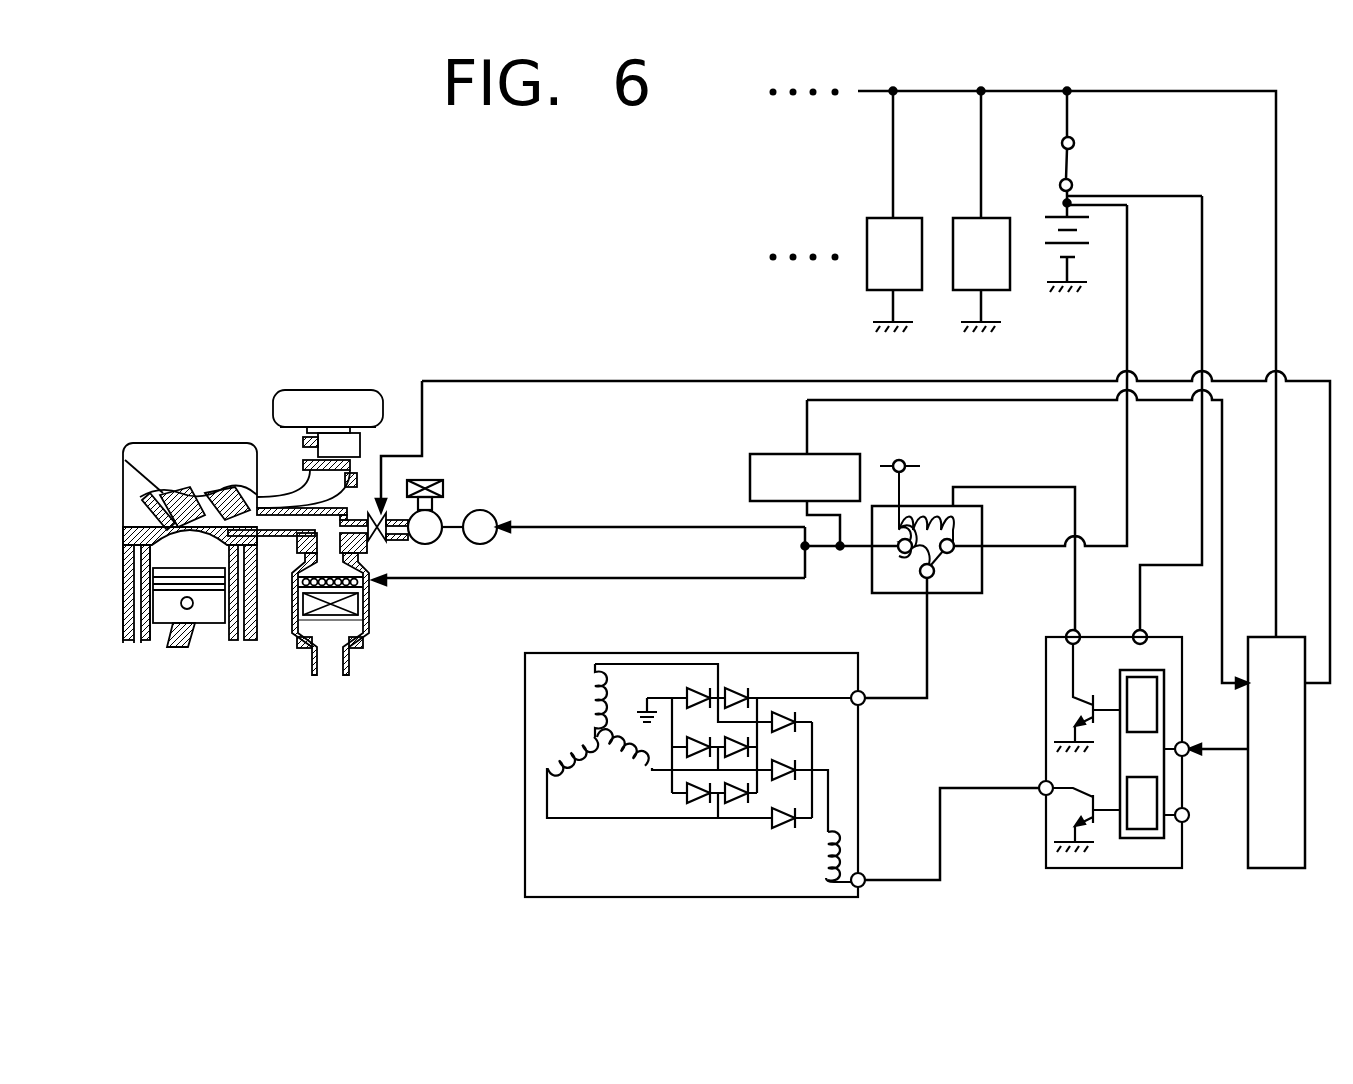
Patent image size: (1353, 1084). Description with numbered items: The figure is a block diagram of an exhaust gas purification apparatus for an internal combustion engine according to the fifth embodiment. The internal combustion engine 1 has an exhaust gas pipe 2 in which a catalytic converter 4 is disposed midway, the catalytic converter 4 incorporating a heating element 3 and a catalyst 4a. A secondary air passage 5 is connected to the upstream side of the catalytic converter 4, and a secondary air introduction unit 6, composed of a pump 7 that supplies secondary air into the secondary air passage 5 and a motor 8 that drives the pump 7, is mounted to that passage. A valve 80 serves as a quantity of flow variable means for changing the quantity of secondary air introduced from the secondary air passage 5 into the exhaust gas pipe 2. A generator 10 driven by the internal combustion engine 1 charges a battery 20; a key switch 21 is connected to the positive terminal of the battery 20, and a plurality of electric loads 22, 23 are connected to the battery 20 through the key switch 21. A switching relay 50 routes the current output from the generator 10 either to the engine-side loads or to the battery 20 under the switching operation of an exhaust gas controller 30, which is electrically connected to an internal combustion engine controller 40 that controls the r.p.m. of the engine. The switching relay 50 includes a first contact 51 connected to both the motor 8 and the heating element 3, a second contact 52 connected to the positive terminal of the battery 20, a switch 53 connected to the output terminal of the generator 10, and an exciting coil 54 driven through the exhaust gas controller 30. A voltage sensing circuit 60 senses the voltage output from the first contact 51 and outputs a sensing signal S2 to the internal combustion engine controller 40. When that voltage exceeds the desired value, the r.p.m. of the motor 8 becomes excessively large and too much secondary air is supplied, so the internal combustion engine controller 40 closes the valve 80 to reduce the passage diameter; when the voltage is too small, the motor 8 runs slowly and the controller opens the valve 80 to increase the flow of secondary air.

The internal combustion engine 1 is at (195, 443).
The exhaust gas pipe 2 is at (283, 530).
The heating element 3 is at (367, 593).
The catalytic converter 4 is at (339, 634).
The catalyst 4a is at (370, 613).
The secondary air passage 5 is at (380, 522).
The secondary air introduction unit 6 is at (497, 467).
The pump 7 is at (445, 512).
The motor 8 is at (493, 512).
The generator 10 is at (525, 838).
The battery 20 is at (1048, 250).
The key switch 21 is at (1058, 160).
The electric load 22 is at (953, 218).
The electric load 23 is at (867, 218).
The exhaust gas controller 30 is at (1078, 868).
The internal combustion engine controller 40 is at (1275, 868).
The switching relay 50 is at (945, 545).
The first contact 51 is at (898, 550).
The second contact 52 is at (953, 551).
The switch 53 is at (933, 578).
The exciting coil 54 is at (935, 505).
The voltage sensing circuit 60 is at (750, 478).
The valve 80 is at (383, 543).
The sensing signal S2 is at (1073, 403).